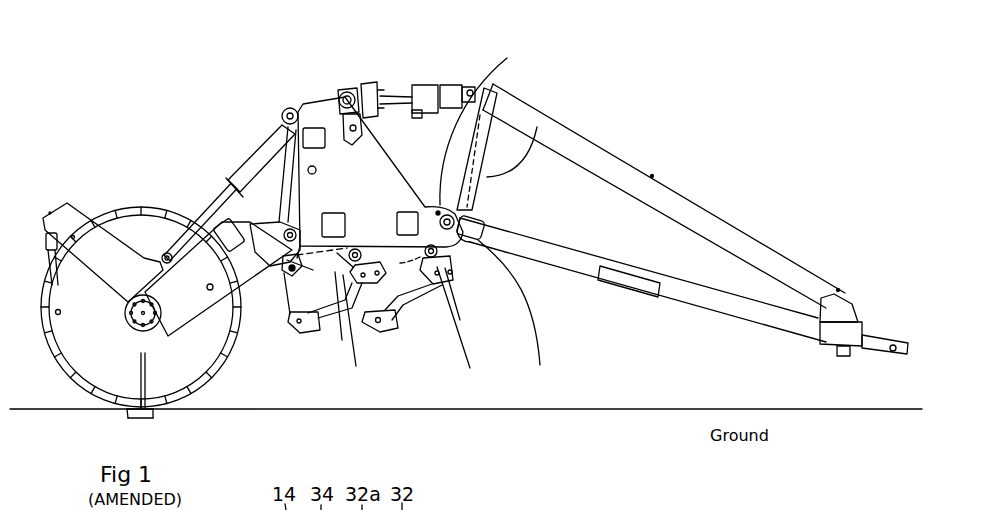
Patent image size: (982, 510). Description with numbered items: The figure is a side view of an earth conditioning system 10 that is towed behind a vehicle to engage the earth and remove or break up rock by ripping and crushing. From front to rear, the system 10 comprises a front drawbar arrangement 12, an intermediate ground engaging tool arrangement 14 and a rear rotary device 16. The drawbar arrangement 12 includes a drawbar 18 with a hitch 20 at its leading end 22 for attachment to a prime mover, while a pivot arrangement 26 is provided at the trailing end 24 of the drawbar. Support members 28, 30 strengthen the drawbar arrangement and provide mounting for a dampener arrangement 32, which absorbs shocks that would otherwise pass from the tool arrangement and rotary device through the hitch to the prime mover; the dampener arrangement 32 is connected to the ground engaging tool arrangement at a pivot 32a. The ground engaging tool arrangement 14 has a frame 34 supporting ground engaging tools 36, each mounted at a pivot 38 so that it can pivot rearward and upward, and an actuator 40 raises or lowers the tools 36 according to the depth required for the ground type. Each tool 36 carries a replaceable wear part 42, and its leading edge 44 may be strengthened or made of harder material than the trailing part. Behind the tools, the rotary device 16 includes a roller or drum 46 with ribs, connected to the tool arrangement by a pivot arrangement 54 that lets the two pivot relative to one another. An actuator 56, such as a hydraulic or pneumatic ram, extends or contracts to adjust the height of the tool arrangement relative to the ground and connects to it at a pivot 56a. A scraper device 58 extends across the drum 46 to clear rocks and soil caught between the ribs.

The earth conditioning system 10 is at (648, 137).
The front drawbar arrangement 12 is at (718, 305).
The intermediate ground engaging tool arrangement 14 is at (287, 106).
The rear rotary device 16 is at (141, 259).
The drawbar 18 is at (567, 268).
The hitch 20 is at (890, 342).
The leading end 22 is at (820, 297).
The trailing end 24 is at (512, 315).
The pivot arrangement 26 is at (478, 112).
The support member 28 is at (555, 118).
The support member 30 is at (537, 127).
The dampener arrangement 32 is at (412, 87).
The pivot 32a is at (365, 84).
The frame 34 is at (318, 130).
The ground engaging tool 36 is at (292, 272).
The pivot 38 is at (352, 330).
The actuator 40 is at (267, 178).
The replaceable wear part 42 is at (300, 317).
The leading edge 44 is at (342, 340).
The roller or drum 46 is at (205, 218).
The pivot arrangement 54 is at (283, 258).
The actuator 56 is at (233, 171).
The pivot 56a is at (285, 109).
The scraper device 58 is at (53, 203).